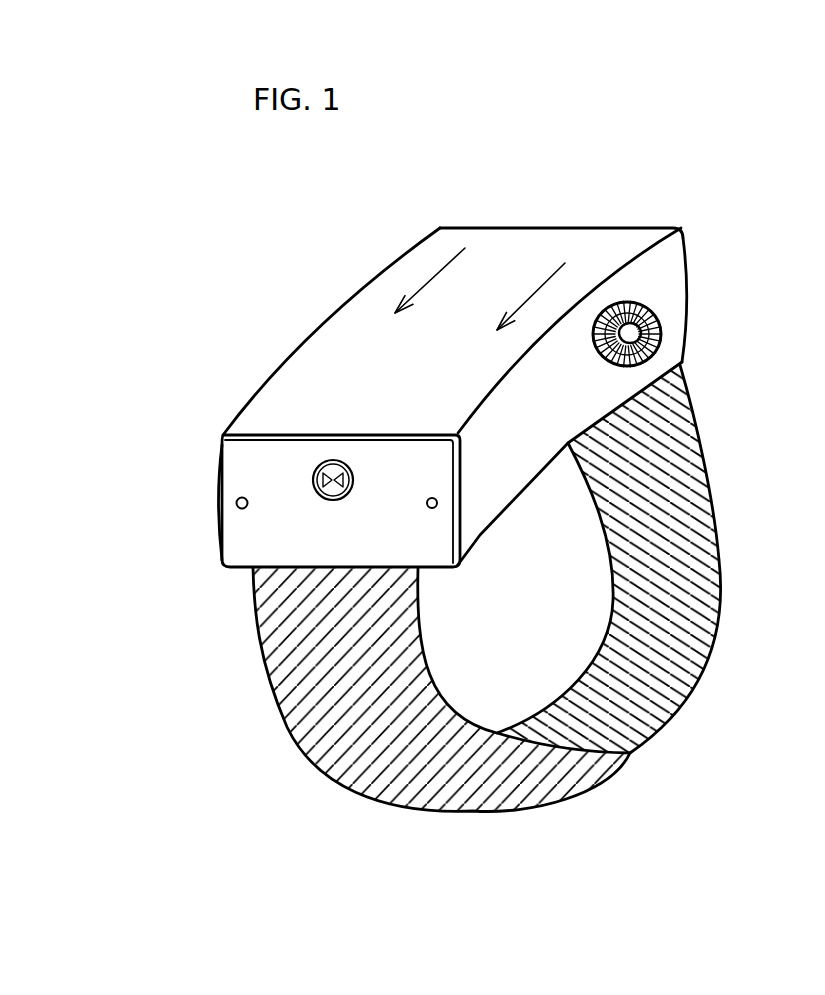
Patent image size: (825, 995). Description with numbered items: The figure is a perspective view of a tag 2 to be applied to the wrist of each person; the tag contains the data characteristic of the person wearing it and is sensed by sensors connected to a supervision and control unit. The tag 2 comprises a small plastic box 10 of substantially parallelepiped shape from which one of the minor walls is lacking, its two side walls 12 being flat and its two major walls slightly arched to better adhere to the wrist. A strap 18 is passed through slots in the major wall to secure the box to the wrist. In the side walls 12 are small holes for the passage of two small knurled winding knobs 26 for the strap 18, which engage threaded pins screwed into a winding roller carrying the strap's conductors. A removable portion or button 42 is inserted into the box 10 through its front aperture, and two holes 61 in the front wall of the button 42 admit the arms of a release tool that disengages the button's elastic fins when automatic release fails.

The tag 2 is at (552, 220).
The box 10 is at (278, 367).
The side wall 12 is at (663, 275).
The knurled winding knob 26 is at (660, 332).
The button 42 is at (318, 545).
The hole 61 is at (237, 503).
The strap 18 is at (418, 790).